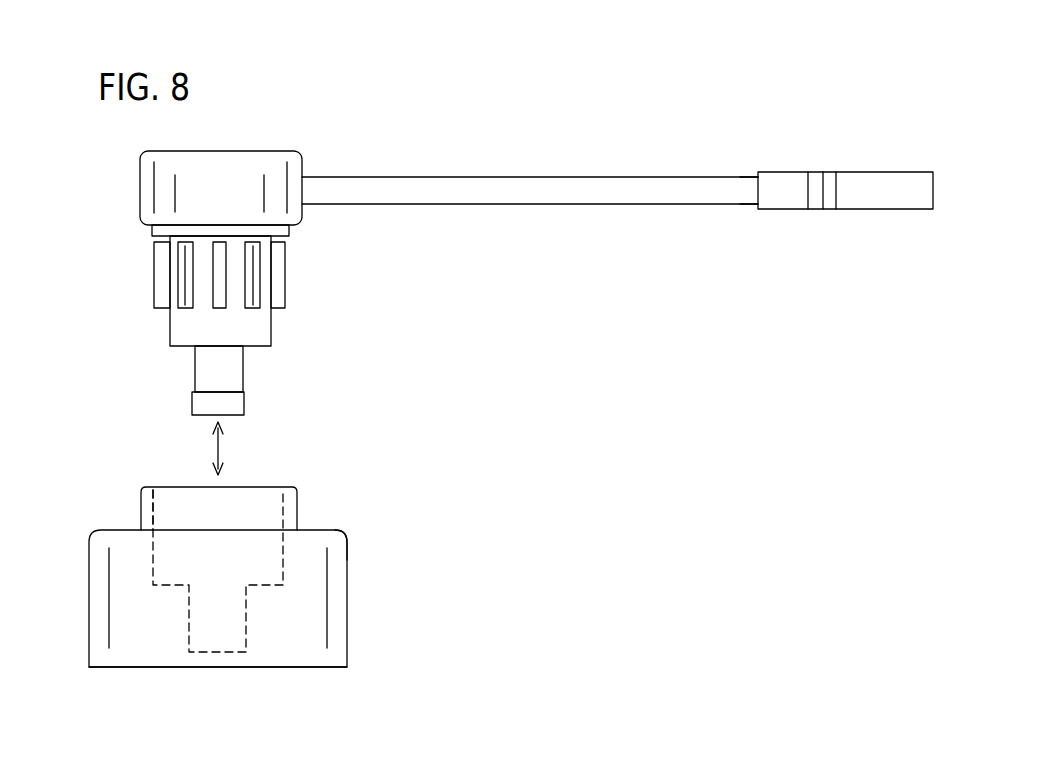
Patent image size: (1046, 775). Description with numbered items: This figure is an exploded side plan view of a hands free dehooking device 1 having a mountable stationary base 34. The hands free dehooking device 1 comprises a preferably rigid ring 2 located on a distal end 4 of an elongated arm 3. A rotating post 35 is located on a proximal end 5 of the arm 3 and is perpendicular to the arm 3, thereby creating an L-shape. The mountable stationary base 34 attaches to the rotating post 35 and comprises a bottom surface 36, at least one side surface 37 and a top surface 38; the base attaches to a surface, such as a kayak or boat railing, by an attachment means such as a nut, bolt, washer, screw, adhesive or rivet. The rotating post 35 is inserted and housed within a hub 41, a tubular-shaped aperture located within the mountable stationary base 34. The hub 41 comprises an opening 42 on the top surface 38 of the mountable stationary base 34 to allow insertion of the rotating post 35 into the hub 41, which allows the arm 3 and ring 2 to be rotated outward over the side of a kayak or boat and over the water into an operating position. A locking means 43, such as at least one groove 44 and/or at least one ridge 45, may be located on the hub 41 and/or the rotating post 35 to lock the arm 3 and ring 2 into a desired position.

The hands free dehooking device 1 is at (565, 162).
The ring 2 is at (875, 172).
The elongated arm 3 is at (530, 204).
The distal end 4 is at (748, 204).
The proximal end 5 is at (313, 173).
The mountable stationary base 34 is at (347, 627).
The rotating post 35 is at (271, 333).
The bottom surface 36 is at (282, 667).
The side surface 37 is at (347, 553).
The top surface 38 is at (287, 487).
The hub 41 is at (283, 558).
The opening 42 is at (180, 505).
The locking means 43 is at (219, 275).
The groove 44 is at (175, 265).
The ridge 45 is at (162, 296).